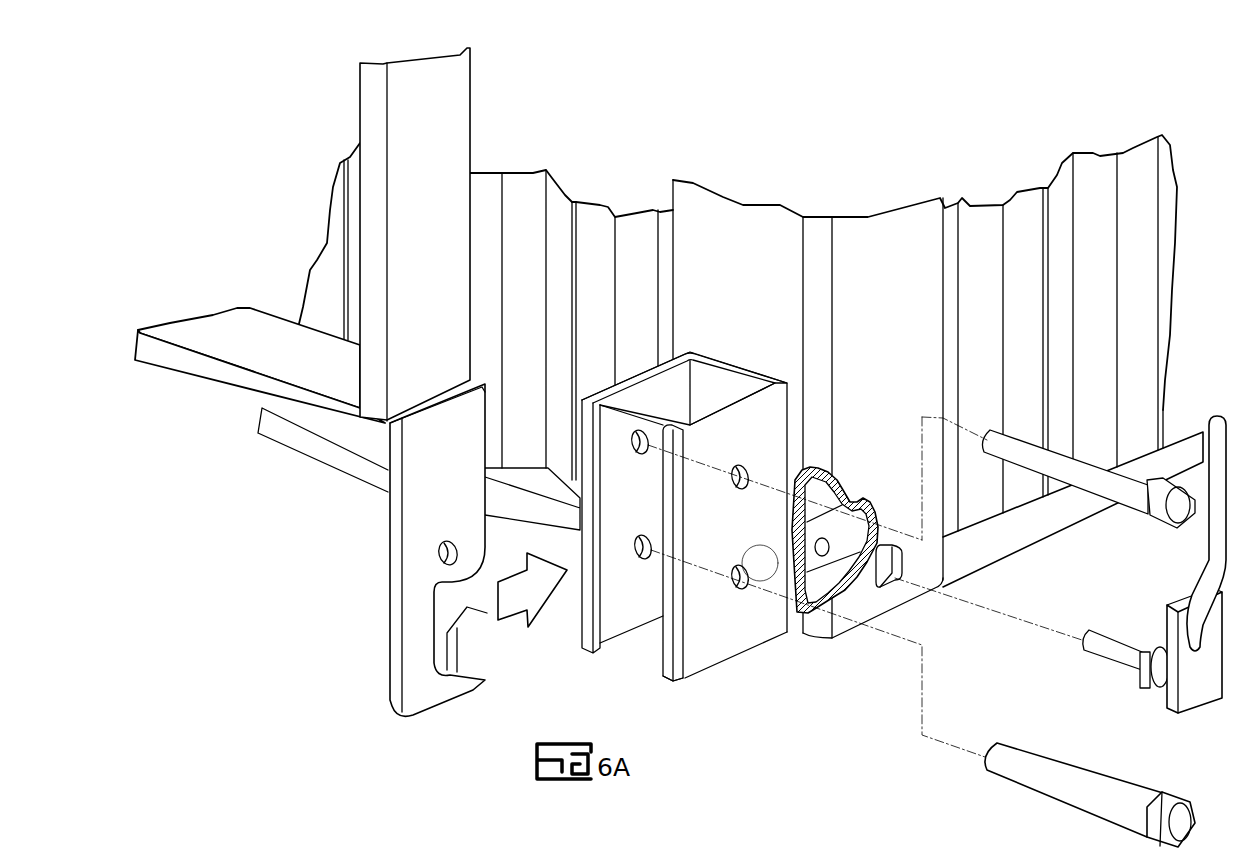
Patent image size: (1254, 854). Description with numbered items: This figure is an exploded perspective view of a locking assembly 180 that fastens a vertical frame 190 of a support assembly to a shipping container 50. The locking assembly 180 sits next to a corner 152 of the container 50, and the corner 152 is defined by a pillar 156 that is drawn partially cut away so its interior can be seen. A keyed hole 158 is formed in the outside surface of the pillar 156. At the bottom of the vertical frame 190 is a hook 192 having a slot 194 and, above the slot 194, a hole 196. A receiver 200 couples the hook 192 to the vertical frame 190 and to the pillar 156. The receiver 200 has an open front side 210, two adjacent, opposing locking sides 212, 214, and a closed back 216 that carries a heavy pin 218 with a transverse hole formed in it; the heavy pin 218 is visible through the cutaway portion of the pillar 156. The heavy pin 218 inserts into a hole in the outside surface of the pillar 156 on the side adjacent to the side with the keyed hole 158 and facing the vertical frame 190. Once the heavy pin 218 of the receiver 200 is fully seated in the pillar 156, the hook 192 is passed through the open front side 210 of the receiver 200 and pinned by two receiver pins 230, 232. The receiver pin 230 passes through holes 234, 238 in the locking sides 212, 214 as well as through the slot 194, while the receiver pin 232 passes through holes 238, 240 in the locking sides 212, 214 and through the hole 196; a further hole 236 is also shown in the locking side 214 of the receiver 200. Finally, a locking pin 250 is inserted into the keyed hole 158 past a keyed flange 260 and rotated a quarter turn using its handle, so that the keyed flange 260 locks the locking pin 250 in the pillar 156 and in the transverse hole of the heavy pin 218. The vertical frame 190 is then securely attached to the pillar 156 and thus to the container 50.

The container 50 is at (896, 202).
The corner 152 is at (985, 568).
The pillar 156 is at (743, 228).
The keyed hole 158 is at (893, 583).
The locking assembly 180 is at (220, 430).
The vertical frame 190 is at (356, 97).
The hook 192 is at (435, 550).
The slot 194 is at (452, 663).
The hole 196 is at (440, 552).
The receiver 200 is at (683, 518).
The open front side 210 is at (660, 667).
The locking side 212 is at (773, 628).
The locking side 214 is at (593, 625).
The closed back 216 is at (727, 392).
The heavy pin 218 is at (840, 528).
The receiver pin 230 is at (1137, 497).
The receiver pin 232 is at (1127, 803).
The hole 234 is at (752, 470).
The hole 236 is at (650, 428).
The hole 238 is at (738, 588).
The hole 240 is at (641, 560).
The locking pin 250 is at (1197, 680).
The keyed flange 260 is at (1140, 677).